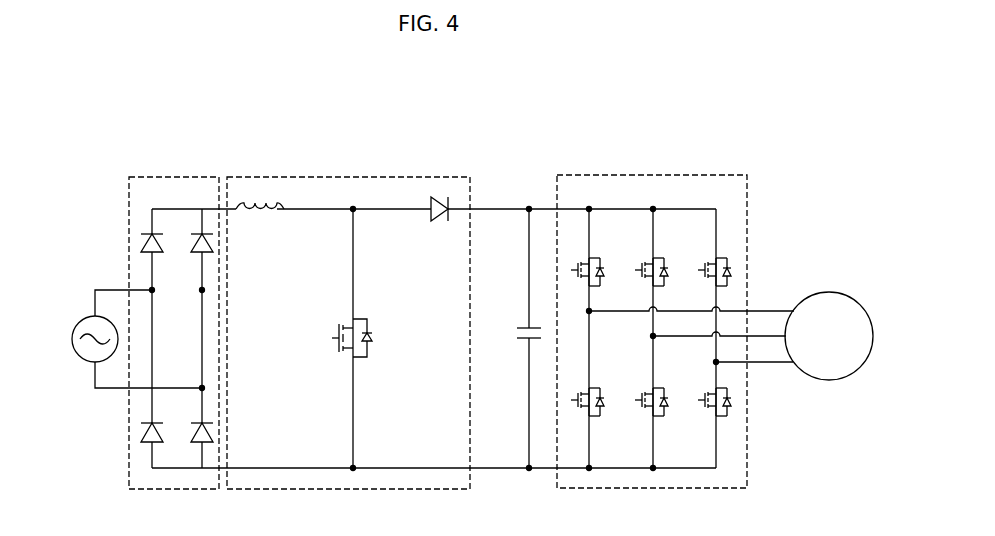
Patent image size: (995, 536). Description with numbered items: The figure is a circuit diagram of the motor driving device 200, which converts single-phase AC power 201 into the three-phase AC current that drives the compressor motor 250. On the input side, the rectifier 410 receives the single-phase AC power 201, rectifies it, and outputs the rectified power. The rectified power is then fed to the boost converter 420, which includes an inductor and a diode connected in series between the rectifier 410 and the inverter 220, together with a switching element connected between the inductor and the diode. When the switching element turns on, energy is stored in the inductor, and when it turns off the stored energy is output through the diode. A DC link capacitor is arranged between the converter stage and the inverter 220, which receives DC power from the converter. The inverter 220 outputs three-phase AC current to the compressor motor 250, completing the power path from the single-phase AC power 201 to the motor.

The motor driving device 200 is at (70, 110).
The single-phase AC power 201 is at (91, 360).
The rectifier 410 is at (203, 177).
The boost converter 420 is at (447, 177).
The inverter 220 is at (727, 175).
The compressor motor 250 is at (832, 292).